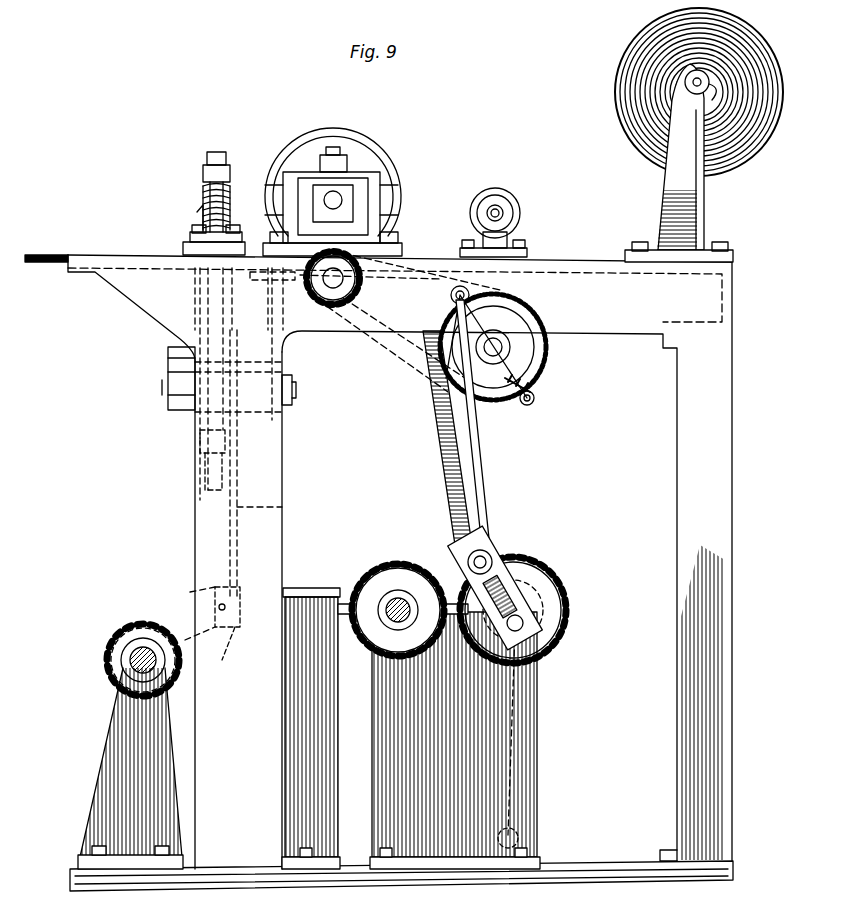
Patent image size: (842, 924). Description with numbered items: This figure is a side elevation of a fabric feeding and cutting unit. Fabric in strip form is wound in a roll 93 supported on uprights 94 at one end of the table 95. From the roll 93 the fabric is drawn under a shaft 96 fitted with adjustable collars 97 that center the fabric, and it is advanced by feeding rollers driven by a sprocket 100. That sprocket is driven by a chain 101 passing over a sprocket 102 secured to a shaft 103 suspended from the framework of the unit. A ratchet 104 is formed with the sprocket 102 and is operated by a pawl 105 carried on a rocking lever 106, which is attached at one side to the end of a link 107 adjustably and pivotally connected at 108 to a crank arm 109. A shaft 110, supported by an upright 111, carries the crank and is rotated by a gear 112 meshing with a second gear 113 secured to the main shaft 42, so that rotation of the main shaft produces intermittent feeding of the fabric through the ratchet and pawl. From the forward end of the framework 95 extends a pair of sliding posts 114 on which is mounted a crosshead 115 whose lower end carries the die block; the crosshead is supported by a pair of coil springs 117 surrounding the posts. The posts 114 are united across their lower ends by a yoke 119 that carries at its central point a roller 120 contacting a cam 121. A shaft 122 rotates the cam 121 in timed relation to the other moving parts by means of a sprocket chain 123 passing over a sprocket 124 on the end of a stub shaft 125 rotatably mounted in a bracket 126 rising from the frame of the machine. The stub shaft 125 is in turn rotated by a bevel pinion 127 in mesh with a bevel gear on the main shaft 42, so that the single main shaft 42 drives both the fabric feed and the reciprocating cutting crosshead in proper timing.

The main shaft 42 is at (404, 622).
The roll 93 is at (618, 82).
The uprights 94 is at (662, 204).
The table 95 is at (612, 264).
The shaft 96 is at (503, 213).
The adjustable collars 97 is at (510, 196).
The sprocket 100 is at (345, 284).
The chain 101 is at (400, 348).
The sprocket 102 is at (542, 348).
The shaft 103 is at (493, 365).
The ratchet 104 is at (538, 324).
The pawl 105 is at (532, 385).
The rocking lever 106 is at (530, 405).
The link 107 is at (468, 466).
The pivotal connection 108 is at (490, 550).
The crank arm 109 is at (545, 568).
The shaft 110 is at (524, 612).
The upright 111 is at (534, 708).
The gear 112 is at (552, 640).
The second gear 113 is at (398, 560).
The sliding posts 114 is at (208, 200).
The crosshead 115 is at (205, 175).
The coil springs 117 is at (198, 215).
The yoke 119 is at (207, 474).
The roller 120 is at (200, 441).
The cam 121 is at (170, 398).
The shaft 122 is at (293, 398).
The sprocket chain 123 is at (262, 511).
The sprocket 124 is at (224, 653).
The stub shaft 125 is at (212, 600).
The bracket 126 is at (311, 728).
The bevel pinion 127 is at (360, 590).